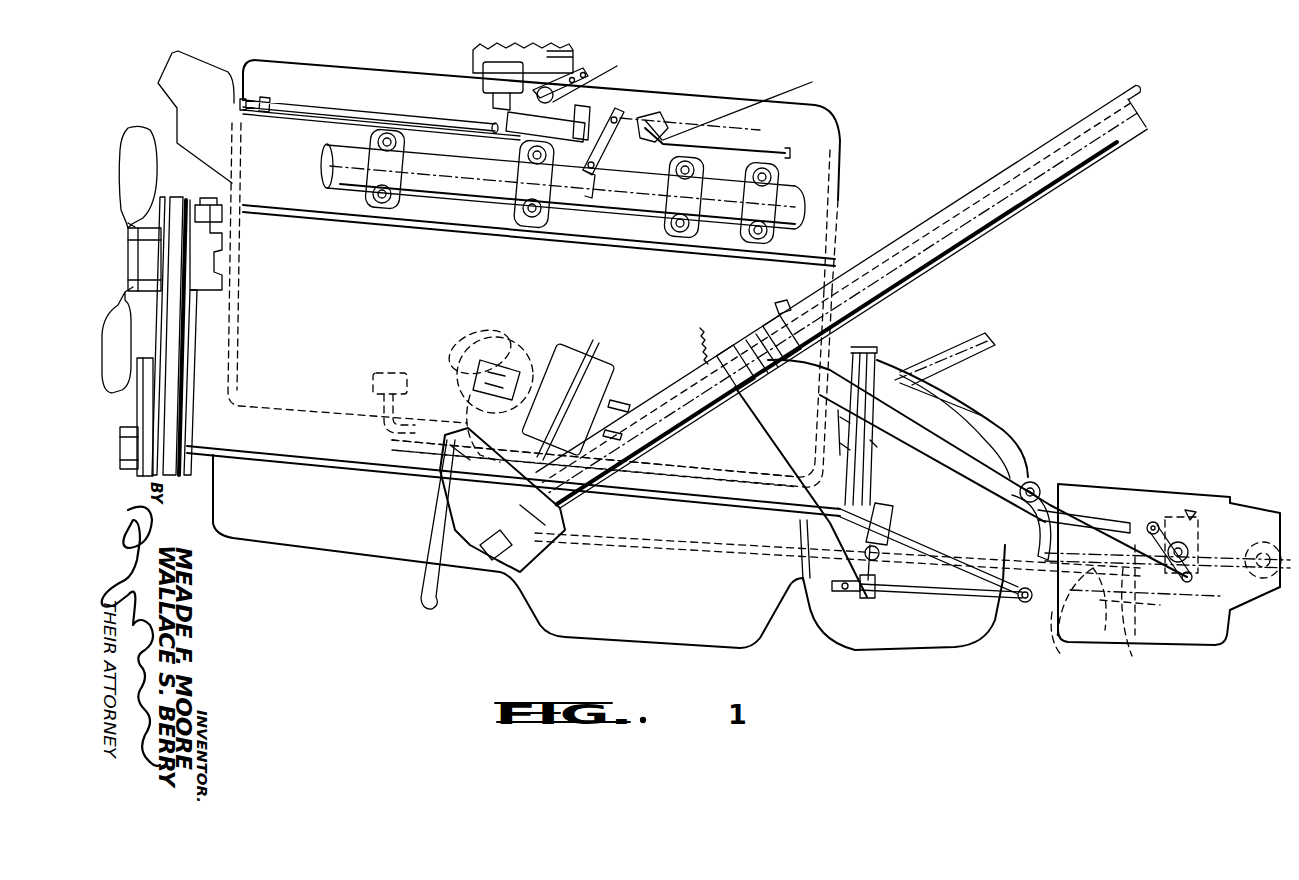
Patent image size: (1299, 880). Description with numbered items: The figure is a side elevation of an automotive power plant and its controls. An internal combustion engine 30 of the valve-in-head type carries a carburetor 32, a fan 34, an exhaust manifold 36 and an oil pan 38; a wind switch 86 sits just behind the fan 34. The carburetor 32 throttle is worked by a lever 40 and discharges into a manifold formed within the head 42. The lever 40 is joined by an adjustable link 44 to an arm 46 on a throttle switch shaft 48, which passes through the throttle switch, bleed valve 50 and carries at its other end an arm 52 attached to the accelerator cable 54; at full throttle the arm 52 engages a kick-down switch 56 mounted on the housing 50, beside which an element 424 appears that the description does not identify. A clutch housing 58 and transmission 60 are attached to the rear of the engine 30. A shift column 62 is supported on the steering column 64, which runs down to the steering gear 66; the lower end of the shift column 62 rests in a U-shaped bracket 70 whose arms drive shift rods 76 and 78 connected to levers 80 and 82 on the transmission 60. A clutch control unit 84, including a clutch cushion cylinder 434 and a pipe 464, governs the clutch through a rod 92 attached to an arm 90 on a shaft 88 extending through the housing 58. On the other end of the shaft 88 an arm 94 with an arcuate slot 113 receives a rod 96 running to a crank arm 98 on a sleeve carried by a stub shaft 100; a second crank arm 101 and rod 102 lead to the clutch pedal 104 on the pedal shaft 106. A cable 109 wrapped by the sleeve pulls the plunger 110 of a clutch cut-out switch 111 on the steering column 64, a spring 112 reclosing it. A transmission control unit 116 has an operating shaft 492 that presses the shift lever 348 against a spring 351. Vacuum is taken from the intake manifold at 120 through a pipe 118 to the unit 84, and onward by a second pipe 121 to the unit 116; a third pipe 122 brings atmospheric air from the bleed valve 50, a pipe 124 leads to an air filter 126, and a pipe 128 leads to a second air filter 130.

The internal combustion engine 30 is at (520, 278).
The carburetor 32 is at (573, 56).
The fan 34 is at (142, 137).
The exhaust manifold 36 is at (458, 178).
The oil pan 38 is at (349, 517).
The lever 40 is at (610, 70).
The head 42 is at (283, 166).
The adjustable link 44 is at (603, 82).
The arm 46 is at (586, 133).
The throttle switch shaft 48 is at (593, 155).
The throttle switch, bleed valve 50 is at (657, 130).
The arm 52 is at (592, 190).
The accelerator cable 54 is at (812, 87).
The kick-down switch 56 is at (655, 143).
The clutch housing 58 is at (983, 427).
The transmission 60 is at (1125, 488).
The shift column 62 is at (1110, 98).
The steering column 64 is at (1039, 189).
The steering gear 66 is at (538, 533).
The U-shaped bracket 70 is at (778, 308).
The shift rod 76 is at (847, 400).
The shift rod 78 is at (880, 365).
The lever 80 is at (1139, 526).
The lever 82 is at (1189, 541).
The clutch control unit 84 is at (580, 336).
The generator bracket 86 is at (197, 172).
The shaft 88 is at (1034, 462).
The arm 90 is at (1008, 525).
The rod 92 is at (691, 455).
The arm 94 is at (1048, 495).
The rod 96 is at (940, 508).
The crank arm 98 is at (873, 509).
The stub shaft 100 is at (875, 597).
The crank arm 101 is at (868, 590).
The rod 102 is at (950, 590).
The clutch pedal 104 is at (948, 398).
The pedal shaft 106 is at (1060, 502).
The cable 109 is at (770, 432).
The plunger 110 is at (740, 363).
The clutch cut-out switch 111 is at (710, 360).
The spring 112 is at (700, 343).
The arcuate slot 113 is at (1050, 596).
The transmission control unit 116 is at (1192, 502).
The pipe 118 is at (414, 120).
The intake manifold connection 120 is at (493, 110).
The second pipe 121 is at (671, 552).
The third pipe 122 is at (837, 157).
The pipe 124 is at (410, 440).
The air filter 126 is at (370, 378).
The pipe 128 is at (1239, 542).
The second air filter 130 is at (1245, 613).
The shift lever 348 is at (1051, 630).
The spring 351 is at (1100, 620).
The plate 424 is at (545, 127).
The clutch cushion cylinder 434 is at (463, 390).
The pipe 464 is at (500, 325).
The operating shaft 492 is at (1127, 628).